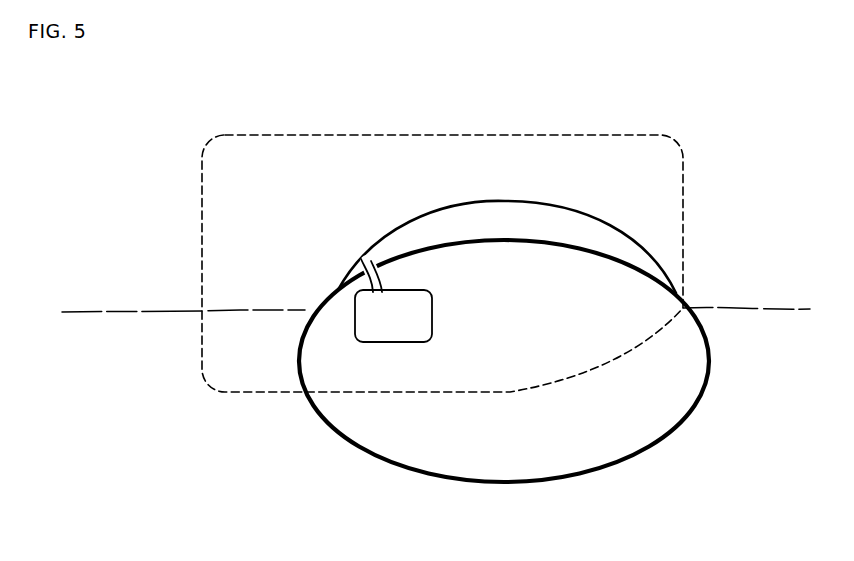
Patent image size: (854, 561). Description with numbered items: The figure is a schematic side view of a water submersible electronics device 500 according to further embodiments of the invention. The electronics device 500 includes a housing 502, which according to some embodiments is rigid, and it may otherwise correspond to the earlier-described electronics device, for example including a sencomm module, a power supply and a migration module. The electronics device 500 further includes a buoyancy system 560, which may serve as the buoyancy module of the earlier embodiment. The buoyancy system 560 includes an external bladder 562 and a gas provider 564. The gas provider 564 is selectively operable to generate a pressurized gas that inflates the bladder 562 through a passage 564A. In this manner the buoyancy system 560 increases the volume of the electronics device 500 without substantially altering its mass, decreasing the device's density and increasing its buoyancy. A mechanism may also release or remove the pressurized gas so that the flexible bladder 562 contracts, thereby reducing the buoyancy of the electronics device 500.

The electronics device 500 is at (130, 184).
The housing 502 is at (334, 438).
The buoyancy system 560 is at (694, 187).
The external bladder 562 is at (366, 236).
The gas provider 564 is at (362, 340).
The passage 564A is at (396, 280).